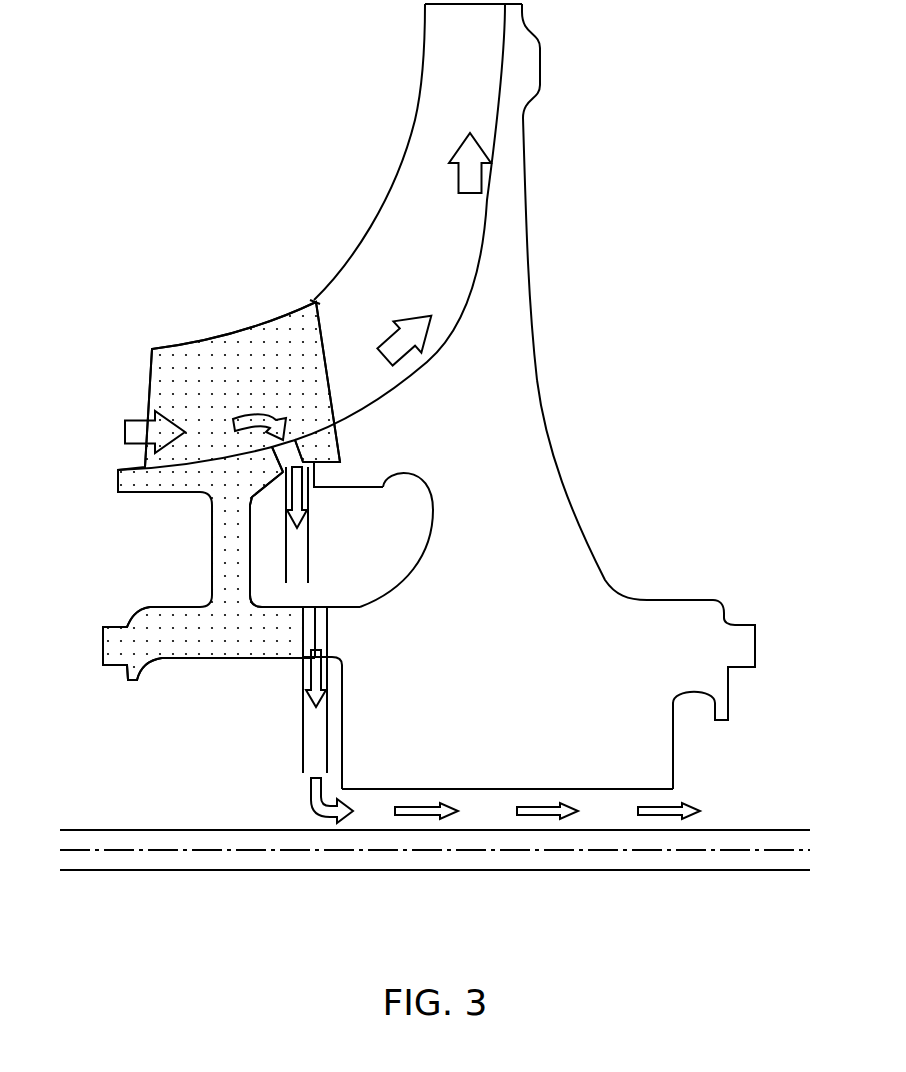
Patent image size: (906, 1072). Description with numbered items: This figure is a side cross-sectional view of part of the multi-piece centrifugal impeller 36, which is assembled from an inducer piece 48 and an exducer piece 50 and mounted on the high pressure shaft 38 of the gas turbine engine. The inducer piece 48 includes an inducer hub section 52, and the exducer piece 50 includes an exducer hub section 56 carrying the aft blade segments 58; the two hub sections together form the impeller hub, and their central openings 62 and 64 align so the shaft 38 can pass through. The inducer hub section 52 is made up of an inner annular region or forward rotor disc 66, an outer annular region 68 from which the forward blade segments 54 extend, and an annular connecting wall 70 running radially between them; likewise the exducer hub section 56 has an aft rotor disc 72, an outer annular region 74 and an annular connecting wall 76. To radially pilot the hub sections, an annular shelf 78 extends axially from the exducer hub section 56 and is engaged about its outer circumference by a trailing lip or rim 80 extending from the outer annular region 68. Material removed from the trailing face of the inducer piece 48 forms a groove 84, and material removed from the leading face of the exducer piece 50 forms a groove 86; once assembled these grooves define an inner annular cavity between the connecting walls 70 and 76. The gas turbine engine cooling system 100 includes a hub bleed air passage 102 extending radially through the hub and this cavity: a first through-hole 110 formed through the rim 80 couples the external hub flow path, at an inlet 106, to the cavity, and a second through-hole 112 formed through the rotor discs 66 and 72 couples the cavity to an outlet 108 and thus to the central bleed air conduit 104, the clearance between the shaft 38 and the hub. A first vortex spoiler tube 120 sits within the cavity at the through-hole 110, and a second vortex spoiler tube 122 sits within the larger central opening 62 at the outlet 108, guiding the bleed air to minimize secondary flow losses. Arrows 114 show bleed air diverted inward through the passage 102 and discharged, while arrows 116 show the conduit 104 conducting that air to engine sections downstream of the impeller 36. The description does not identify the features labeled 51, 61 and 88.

The multi-piece centrifugal impeller 36 is at (144, 52).
The high pressure shaft 38 is at (772, 862).
The inducer piece 48 is at (221, 453).
The exducer piece 50 is at (367, 152).
The airfoil-platform junction 51 is at (314, 299).
The inducer hub section 52 is at (142, 716).
The forward blade segments 54 is at (201, 382).
The exducer hub section 56 is at (731, 705).
The aft blade segments 58 is at (486, 46).
The rotor shaft surface 61 is at (128, 848).
The central opening of inducer hub section 62 is at (218, 725).
The central opening of exducer hub section 64 is at (607, 789).
The forward rotor disc 66 is at (104, 646).
The outer annular region of inducer hub section 68 is at (118, 477).
The annular connecting wall of inducer hub section 70 is at (226, 562).
The aft rotor disc 72 is at (505, 762).
The outer annular region of exducer hub section 74 is at (503, 370).
The annular connecting wall of exducer hub section 76 is at (507, 540).
The annular shelf 78 is at (352, 490).
The trailing lip or rim 80 is at (338, 438).
The annular groove of inducer piece 84 is at (262, 592).
The annular groove of exducer piece 86 is at (399, 573).
The core gas flow 88 is at (470, 194).
The gas turbine engine cooling system 100 is at (435, 848).
The hub bleed air passage 102 is at (211, 550).
The central bleed air conduit 104 is at (520, 873).
The bleed air inlet 106 is at (285, 440).
The bleed air outlet 108 is at (302, 662).
The first through-hole 110 is at (318, 462).
The second through-hole 112 is at (322, 626).
The bleed air flow arrows 114 is at (262, 420).
The conduit flow arrows 116 is at (350, 820).
The first vortex spoiler tube 120 is at (298, 551).
The second vortex spoiler tube 122 is at (302, 738).